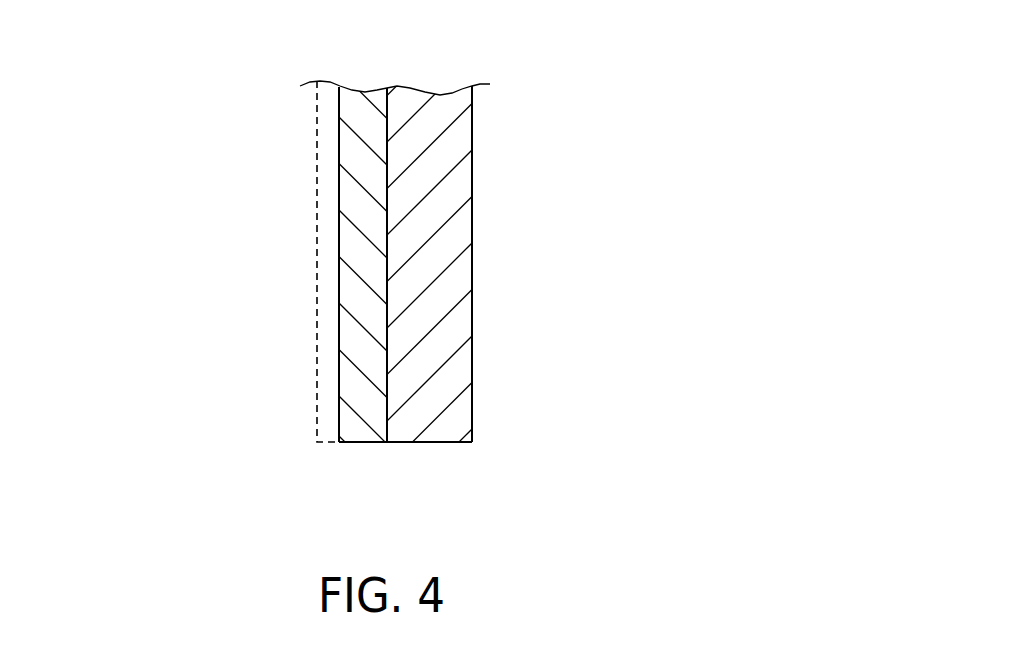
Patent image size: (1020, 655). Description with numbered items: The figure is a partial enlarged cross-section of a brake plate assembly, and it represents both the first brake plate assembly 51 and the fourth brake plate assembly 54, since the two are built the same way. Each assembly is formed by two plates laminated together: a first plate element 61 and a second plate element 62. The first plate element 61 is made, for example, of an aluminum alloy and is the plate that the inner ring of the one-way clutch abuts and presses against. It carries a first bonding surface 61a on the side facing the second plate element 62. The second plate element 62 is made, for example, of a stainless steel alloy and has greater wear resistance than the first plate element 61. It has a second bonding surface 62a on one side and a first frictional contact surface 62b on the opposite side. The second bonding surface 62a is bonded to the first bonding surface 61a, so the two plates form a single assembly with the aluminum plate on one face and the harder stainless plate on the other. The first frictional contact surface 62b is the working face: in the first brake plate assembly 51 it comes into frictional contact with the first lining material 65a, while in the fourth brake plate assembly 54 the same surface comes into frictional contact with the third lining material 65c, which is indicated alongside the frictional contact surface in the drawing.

The first brake plate assembly 51 is at (486, 233).
The fourth brake plate assembly 54 is at (395, 261).
The first plate element 61 is at (443, 447).
The first bonding surface 61a is at (387, 125).
The second plate element 62 is at (365, 447).
The second bonding surface 62a is at (387, 198).
The first frictional contact surface 62b is at (338, 232).
The first lining material 65a is at (218, 261).
The third lining material 65c is at (318, 359).